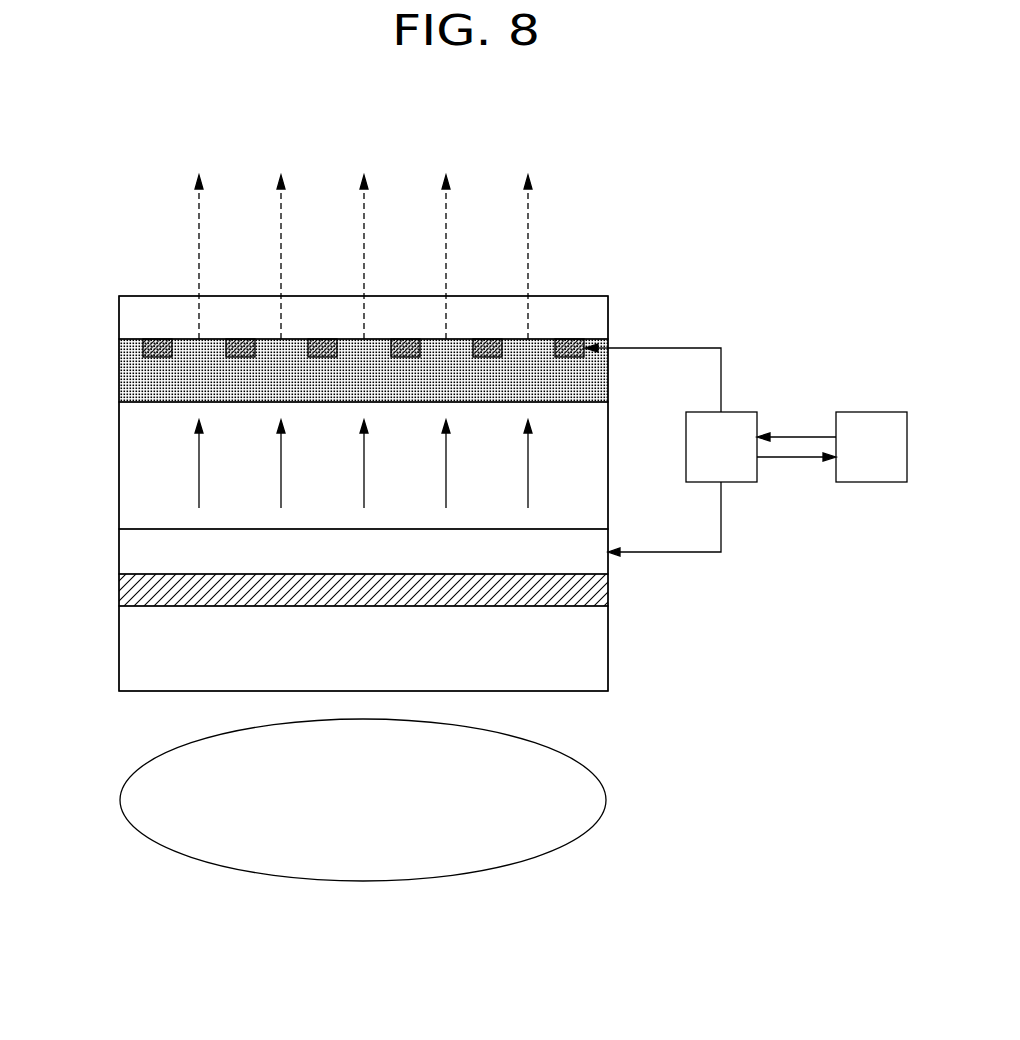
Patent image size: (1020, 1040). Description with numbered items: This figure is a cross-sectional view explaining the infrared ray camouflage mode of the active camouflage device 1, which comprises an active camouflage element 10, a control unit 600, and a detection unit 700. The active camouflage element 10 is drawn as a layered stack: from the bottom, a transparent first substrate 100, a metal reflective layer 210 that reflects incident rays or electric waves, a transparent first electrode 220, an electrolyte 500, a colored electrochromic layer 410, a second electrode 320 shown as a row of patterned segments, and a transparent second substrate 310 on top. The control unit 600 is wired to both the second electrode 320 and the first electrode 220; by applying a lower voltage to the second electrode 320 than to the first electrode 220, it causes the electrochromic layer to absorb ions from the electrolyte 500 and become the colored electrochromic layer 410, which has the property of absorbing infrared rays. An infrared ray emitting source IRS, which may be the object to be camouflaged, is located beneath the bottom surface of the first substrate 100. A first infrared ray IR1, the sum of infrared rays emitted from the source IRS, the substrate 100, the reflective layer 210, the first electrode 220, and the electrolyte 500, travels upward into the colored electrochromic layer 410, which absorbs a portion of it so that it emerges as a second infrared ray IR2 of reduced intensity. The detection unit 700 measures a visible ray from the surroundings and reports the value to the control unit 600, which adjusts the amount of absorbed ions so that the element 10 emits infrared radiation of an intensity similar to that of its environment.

The active camouflage device 1 is at (695, 182).
The active camouflage element 10 is at (568, 276).
The first substrate 100 is at (128, 648).
The reflective layer 210 is at (128, 589).
The first electrode 220 is at (128, 551).
The second substrate 310 is at (128, 317).
The second electrode 320 is at (128, 348).
The colored electrochromic layer 410 is at (128, 379).
The electrolyte 500 is at (128, 439).
The control unit 600 is at (740, 412).
The detection unit 700 is at (873, 412).
The first infrared ray IR1 is at (198, 473).
The second infrared ray IR2 is at (198, 236).
The infrared ray emitting source IRS is at (120, 800).